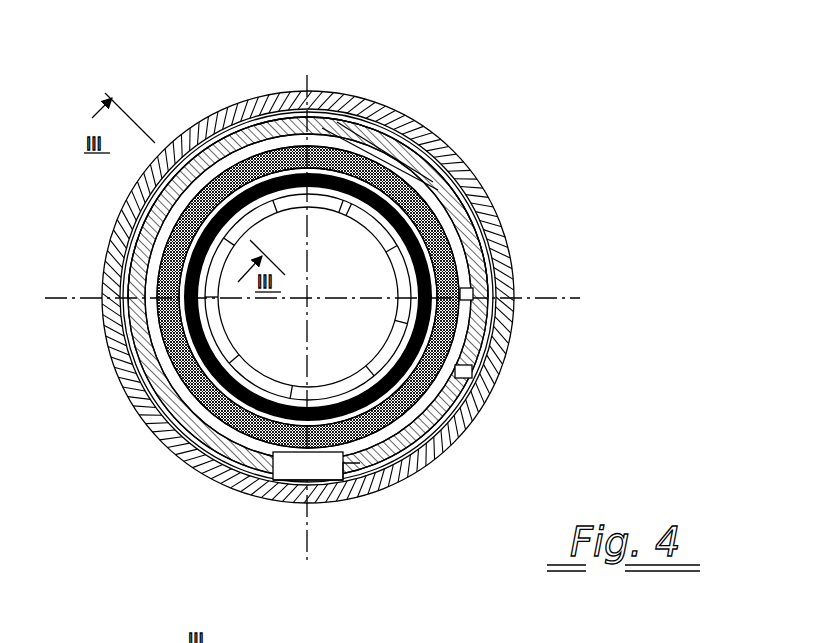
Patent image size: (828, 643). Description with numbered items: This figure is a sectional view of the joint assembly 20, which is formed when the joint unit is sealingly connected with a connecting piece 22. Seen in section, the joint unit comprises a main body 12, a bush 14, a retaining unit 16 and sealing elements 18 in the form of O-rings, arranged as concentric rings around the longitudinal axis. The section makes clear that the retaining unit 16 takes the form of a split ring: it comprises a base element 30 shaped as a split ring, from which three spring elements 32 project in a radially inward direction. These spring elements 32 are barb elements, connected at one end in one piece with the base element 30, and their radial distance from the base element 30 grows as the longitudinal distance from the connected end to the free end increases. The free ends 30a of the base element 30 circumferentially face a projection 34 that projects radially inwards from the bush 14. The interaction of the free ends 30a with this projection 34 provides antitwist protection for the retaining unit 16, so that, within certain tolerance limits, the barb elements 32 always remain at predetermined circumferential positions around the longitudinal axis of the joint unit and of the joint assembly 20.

The main body 12 is at (397, 260).
The bush 14 is at (427, 125).
The retaining unit 16 is at (450, 152).
The sealing elements 18 is at (376, 366).
The joint assembly 20 is at (580, 74).
The connecting piece 22 is at (490, 316).
The base element 30 is at (116, 358).
The free ends 30a is at (490, 362).
The spring elements 32 is at (242, 100).
The projection 34 is at (412, 438).